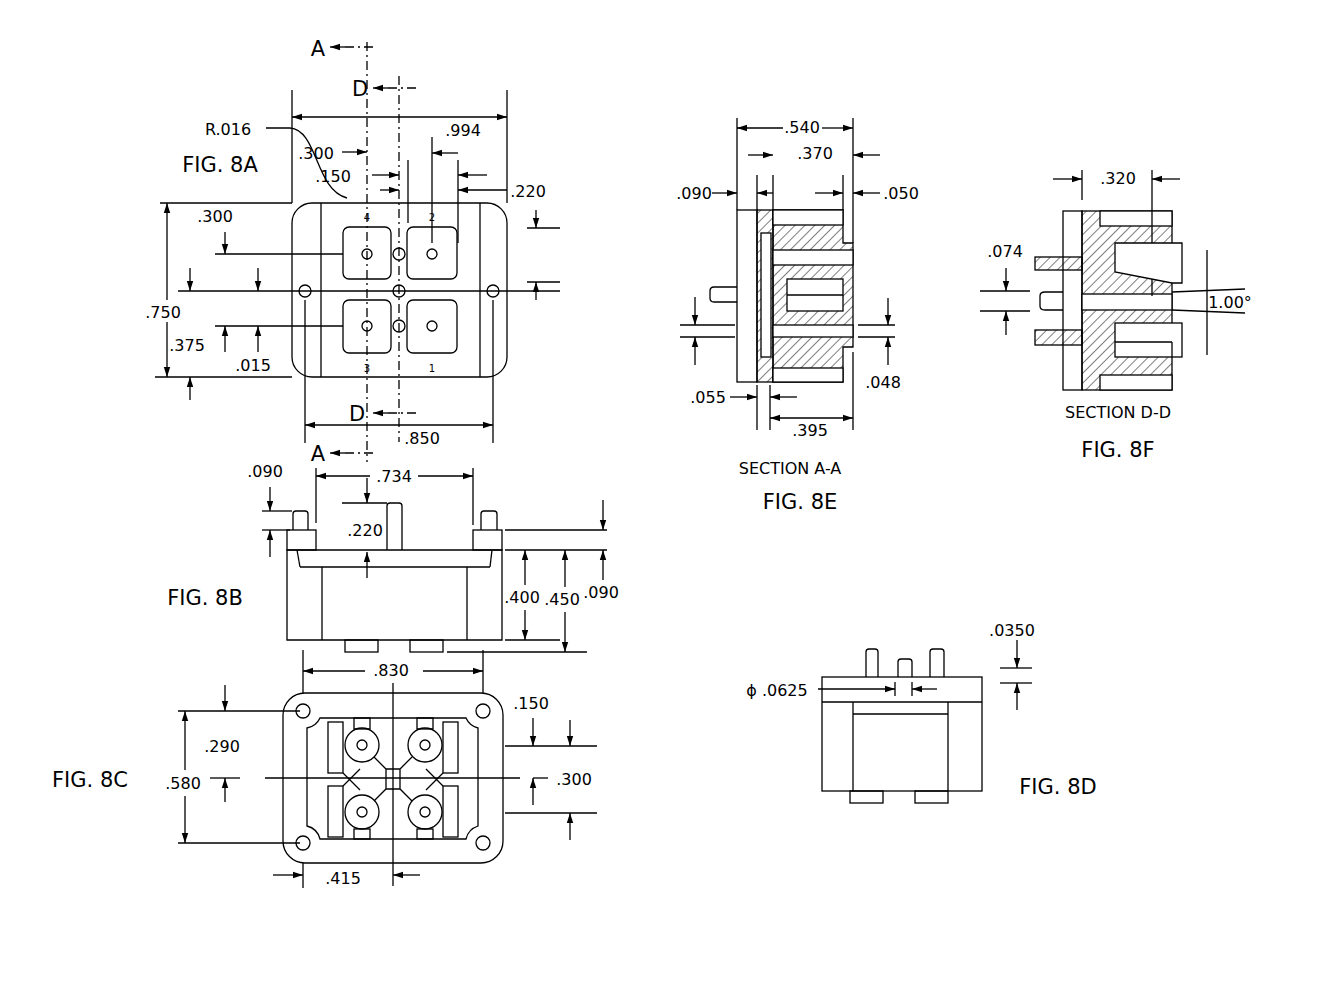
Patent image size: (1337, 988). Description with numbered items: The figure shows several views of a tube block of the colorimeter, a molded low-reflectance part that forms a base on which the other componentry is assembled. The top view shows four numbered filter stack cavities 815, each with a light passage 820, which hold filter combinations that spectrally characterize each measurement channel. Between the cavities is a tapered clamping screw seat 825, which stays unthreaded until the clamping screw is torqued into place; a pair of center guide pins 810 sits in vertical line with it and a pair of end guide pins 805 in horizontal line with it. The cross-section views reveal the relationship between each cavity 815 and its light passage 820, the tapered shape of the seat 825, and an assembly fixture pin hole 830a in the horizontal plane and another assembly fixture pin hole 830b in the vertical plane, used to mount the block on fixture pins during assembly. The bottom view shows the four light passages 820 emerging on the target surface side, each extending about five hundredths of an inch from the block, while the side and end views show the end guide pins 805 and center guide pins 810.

In FIG. 8B, the end guide pin 805 is at (577, 478).
In FIG. 8D, the center guide pin 810 is at (937, 649).
In FIG. 8A, the filter stack cavity 815 is at (463, 340).
In FIG. 8A, the light passage 820 is at (437, 254).
In FIG. 8C, the light passage 820 is at (430, 812).
In FIG. 8A, the clamping screw seat 825 is at (405, 291).
In FIG. 8F, the clamping screw seat 825 is at (1170, 283).
In FIG. 8E, the assembly fixture pin hole 830a is at (837, 285).
In FIG. 8F, the assembly fixture pin hole 830b is at (1123, 342).